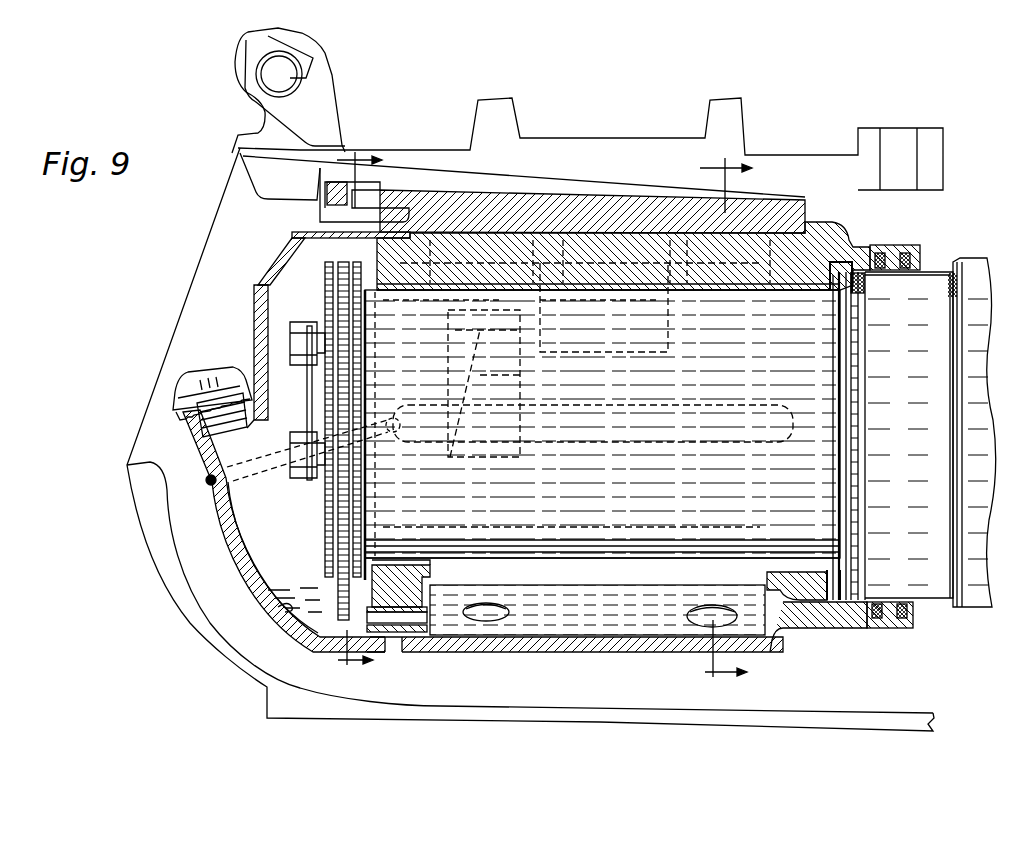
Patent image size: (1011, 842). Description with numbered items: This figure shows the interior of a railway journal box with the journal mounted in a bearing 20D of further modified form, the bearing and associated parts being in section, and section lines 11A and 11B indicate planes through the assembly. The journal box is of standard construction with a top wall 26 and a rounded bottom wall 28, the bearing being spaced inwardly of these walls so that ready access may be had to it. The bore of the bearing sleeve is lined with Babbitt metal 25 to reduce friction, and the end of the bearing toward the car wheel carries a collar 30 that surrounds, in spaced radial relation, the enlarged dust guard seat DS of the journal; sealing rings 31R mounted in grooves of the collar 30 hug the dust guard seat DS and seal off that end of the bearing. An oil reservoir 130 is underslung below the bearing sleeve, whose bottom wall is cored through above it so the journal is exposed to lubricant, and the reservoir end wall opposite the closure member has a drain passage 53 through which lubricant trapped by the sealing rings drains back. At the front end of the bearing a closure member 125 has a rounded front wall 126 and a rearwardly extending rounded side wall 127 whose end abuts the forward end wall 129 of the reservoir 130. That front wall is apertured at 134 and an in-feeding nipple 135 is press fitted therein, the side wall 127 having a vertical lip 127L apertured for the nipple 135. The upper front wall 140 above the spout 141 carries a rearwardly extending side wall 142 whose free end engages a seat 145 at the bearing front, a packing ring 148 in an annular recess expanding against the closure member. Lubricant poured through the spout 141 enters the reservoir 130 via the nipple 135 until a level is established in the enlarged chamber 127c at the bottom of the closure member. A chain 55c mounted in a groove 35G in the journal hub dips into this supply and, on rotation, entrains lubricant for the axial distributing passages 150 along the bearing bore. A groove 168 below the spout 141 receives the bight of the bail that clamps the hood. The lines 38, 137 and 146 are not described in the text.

The top wall 26 is at (540, 148).
The rounded bottom wall 28 is at (515, 713).
The field yoke 38 is at (570, 200).
The bearing 20D is at (852, 224).
The Babbitt metal 25 is at (800, 293).
The collar 30 is at (923, 244).
The sealing rings 31R is at (900, 600).
The drain passage 53 is at (817, 610).
The groove 35G is at (347, 255).
The chain 55c is at (322, 578).
The closure member 125 is at (272, 262).
The rounded front wall 126 is at (240, 583).
The side wall 127 is at (330, 648).
The enlarged chamber 127c is at (280, 607).
The vertical lip 127L is at (383, 652).
The forward end wall 129 is at (418, 592).
The oil reservoir 130 is at (575, 638).
The aperture 134 is at (420, 630).
The in-feeding nipple 135 is at (432, 650).
The spacer 137 is at (392, 640).
The upper front wall 140 is at (263, 293).
The spout 141 is at (197, 437).
The rearwardly extending side wall 142 is at (313, 228).
The seat 145 is at (408, 247).
The rotor 146 is at (397, 550).
The packing ring 148 is at (395, 243).
The distributing passages 150 is at (643, 410).
The groove 168 is at (208, 482).
The section line 11A is at (375, 419).
The section line 11B is at (721, 425).
The dust guard seat DS is at (915, 410).